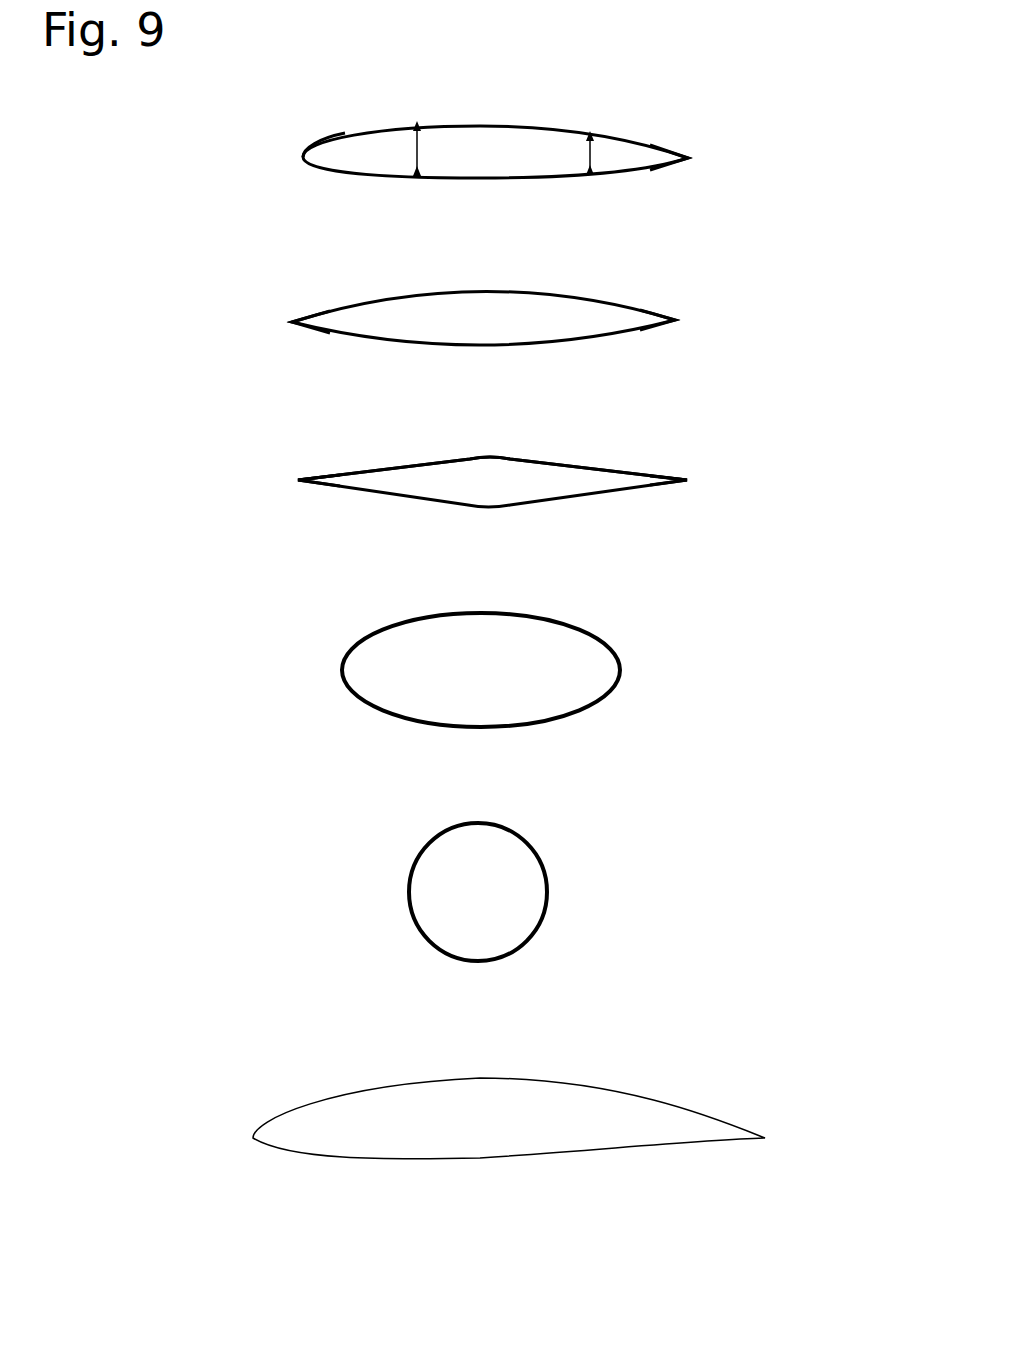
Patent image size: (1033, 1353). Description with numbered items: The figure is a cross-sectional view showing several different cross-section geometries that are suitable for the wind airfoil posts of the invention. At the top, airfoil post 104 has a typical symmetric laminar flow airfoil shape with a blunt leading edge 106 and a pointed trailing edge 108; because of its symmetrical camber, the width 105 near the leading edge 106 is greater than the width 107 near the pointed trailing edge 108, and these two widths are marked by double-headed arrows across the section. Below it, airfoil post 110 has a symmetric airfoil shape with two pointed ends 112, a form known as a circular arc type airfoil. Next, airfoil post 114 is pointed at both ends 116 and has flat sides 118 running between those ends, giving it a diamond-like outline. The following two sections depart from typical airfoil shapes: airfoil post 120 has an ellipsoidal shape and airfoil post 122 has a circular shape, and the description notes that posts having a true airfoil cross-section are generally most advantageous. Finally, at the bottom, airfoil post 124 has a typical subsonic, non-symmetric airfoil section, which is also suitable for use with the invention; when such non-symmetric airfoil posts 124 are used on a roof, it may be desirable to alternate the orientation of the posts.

The airfoil post 104 is at (784, 157).
The width 105 is at (415, 152).
The leading edge 106 is at (300, 158).
The width 107 is at (598, 140).
The trailing edge 108 is at (688, 158).
The airfoil post 110 is at (772, 317).
The pointed ends 112 is at (292, 322).
The airfoil post 114 is at (785, 477).
The ends 116 is at (298, 480).
The flat sides 118 is at (438, 500).
The airfoil post 120 is at (657, 703).
The airfoil post 122 is at (614, 895).
The airfoil post 124 is at (342, 1110).